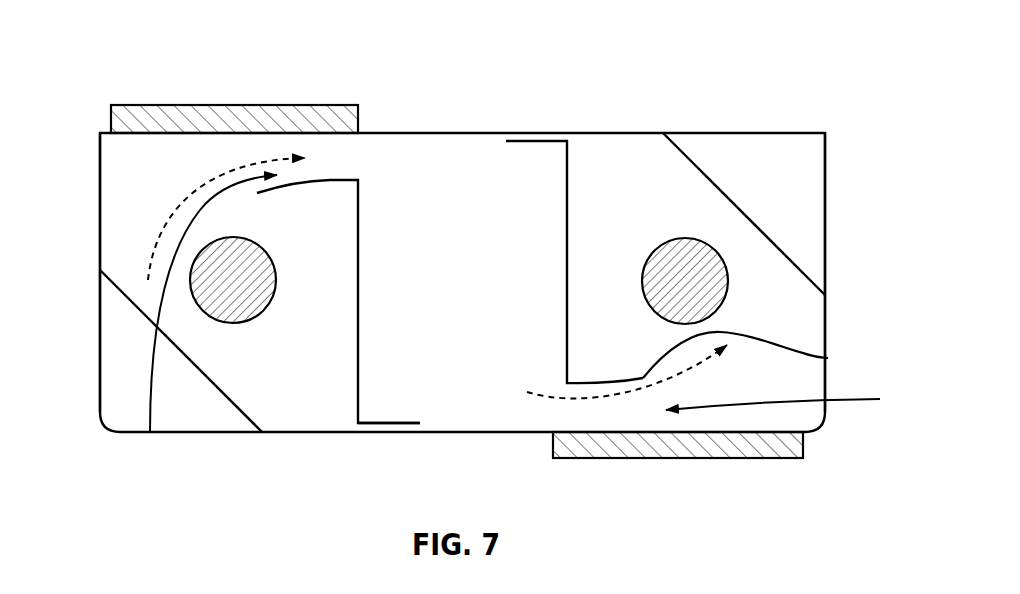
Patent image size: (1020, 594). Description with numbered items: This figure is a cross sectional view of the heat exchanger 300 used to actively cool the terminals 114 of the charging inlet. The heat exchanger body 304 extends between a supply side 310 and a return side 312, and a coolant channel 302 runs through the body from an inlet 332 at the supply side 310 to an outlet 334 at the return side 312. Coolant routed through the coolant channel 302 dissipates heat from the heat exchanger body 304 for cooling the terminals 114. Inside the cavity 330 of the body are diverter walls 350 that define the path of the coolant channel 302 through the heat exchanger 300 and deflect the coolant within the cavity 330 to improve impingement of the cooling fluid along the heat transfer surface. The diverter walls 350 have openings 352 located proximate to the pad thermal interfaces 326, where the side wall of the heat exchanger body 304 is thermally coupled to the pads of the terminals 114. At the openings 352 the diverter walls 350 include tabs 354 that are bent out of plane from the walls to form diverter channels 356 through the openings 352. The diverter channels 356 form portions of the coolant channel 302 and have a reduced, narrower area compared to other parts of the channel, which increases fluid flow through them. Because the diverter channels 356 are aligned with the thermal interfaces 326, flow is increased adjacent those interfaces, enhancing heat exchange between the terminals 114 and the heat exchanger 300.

The heat exchanger 300 is at (732, 54).
The coolant channel 302 is at (456, 190).
The heat exchanger body 304 is at (100, 375).
The supply side 310 is at (100, 245).
The return side 312 is at (828, 332).
The terminals 114 is at (232, 105).
The pad thermal interfaces 326 is at (174, 127).
The cavity 330 is at (464, 406).
The inlet 332 is at (264, 327).
The outlet 334 is at (721, 244).
The diverter walls 350 is at (567, 187).
The openings 352 is at (350, 161).
The tabs 354 is at (300, 186).
The diverter channels 356 is at (150, 432).